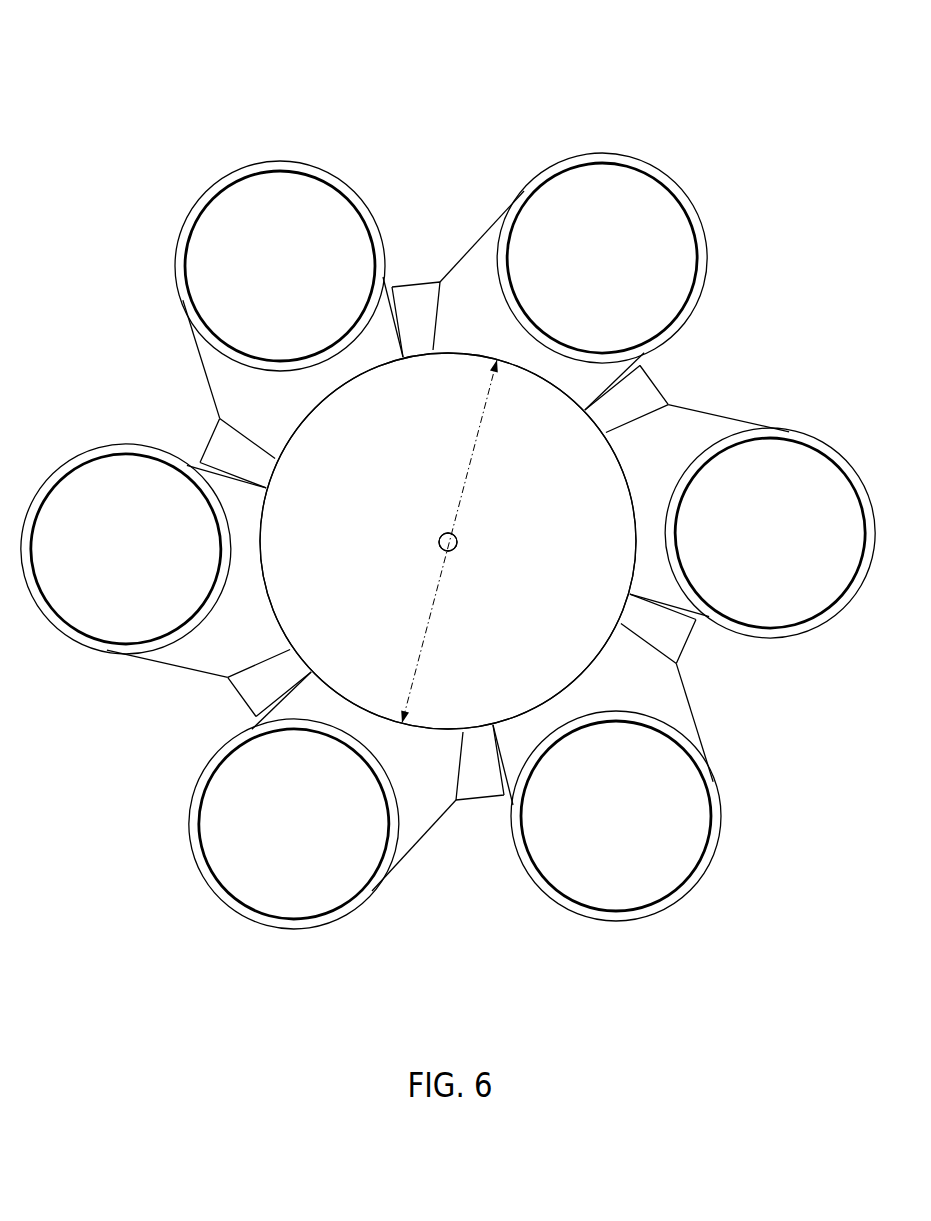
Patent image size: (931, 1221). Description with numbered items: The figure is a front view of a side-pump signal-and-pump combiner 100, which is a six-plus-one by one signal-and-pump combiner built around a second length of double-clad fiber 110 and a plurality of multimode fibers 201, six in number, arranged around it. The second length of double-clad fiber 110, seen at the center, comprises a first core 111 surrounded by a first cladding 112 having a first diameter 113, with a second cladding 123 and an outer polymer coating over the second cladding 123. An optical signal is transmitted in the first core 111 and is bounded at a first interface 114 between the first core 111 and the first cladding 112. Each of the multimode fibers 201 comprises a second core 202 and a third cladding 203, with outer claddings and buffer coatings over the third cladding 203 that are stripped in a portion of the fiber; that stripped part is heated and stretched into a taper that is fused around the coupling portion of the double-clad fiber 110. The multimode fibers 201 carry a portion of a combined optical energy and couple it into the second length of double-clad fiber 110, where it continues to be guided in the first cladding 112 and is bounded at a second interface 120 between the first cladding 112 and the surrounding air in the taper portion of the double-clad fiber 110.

The side-pump signal-and-pump combiner 100 is at (497, 188).
The second length of double-clad fiber 110 is at (565, 470).
The first core 111 is at (444, 532).
The first cladding 112 is at (317, 497).
The first diameter 113 is at (437, 597).
The first interface 114 is at (447, 550).
The second interface 120 is at (427, 353).
The second cladding 123 is at (677, 637).
The multimode fibers 201 is at (477, 257).
The second core 202 is at (275, 225).
The third cladding 203 is at (197, 200).